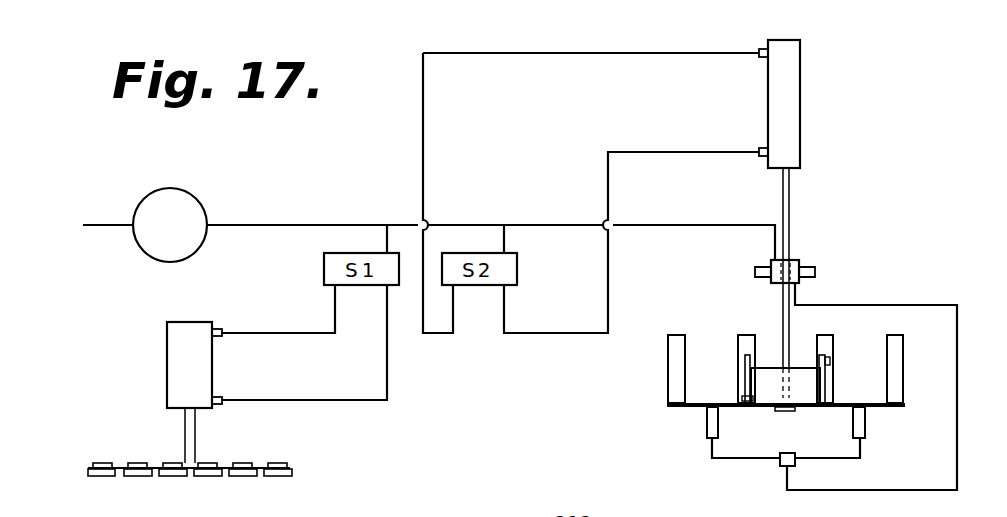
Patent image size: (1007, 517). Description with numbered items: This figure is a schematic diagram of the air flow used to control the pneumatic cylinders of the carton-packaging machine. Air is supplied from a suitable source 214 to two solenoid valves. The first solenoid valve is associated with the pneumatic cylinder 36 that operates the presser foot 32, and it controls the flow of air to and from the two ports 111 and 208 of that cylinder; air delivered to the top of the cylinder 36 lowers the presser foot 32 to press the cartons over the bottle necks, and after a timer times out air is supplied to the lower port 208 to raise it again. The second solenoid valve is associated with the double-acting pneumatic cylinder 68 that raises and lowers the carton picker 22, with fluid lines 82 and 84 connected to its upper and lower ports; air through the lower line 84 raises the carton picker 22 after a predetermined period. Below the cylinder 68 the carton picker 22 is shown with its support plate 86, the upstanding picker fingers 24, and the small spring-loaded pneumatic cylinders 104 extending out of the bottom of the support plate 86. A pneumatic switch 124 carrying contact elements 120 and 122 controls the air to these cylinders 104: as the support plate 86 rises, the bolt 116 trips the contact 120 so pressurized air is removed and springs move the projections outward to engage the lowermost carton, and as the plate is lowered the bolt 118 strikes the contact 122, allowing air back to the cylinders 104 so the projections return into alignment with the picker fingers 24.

The air source 214 is at (200, 204).
The pneumatic cylinder 36 is at (172, 357).
The port 111 is at (218, 328).
The lower port 208 is at (220, 396).
The presser foot 32 is at (262, 448).
The pneumatic cylinder 68 is at (792, 112).
The fluid line 82 is at (763, 58).
The fluid line 84 is at (763, 157).
The pneumatic switch 124 is at (795, 260).
The contact element 120 is at (754, 272).
The contact element 122 is at (817, 272).
The carton picker 22 is at (727, 405).
The support plate 86 is at (697, 410).
The picker fingers 24 is at (672, 380).
The bolt 116 is at (742, 385).
The bolt 118 is at (828, 356).
The pneumatic cylinders 104 is at (720, 425).